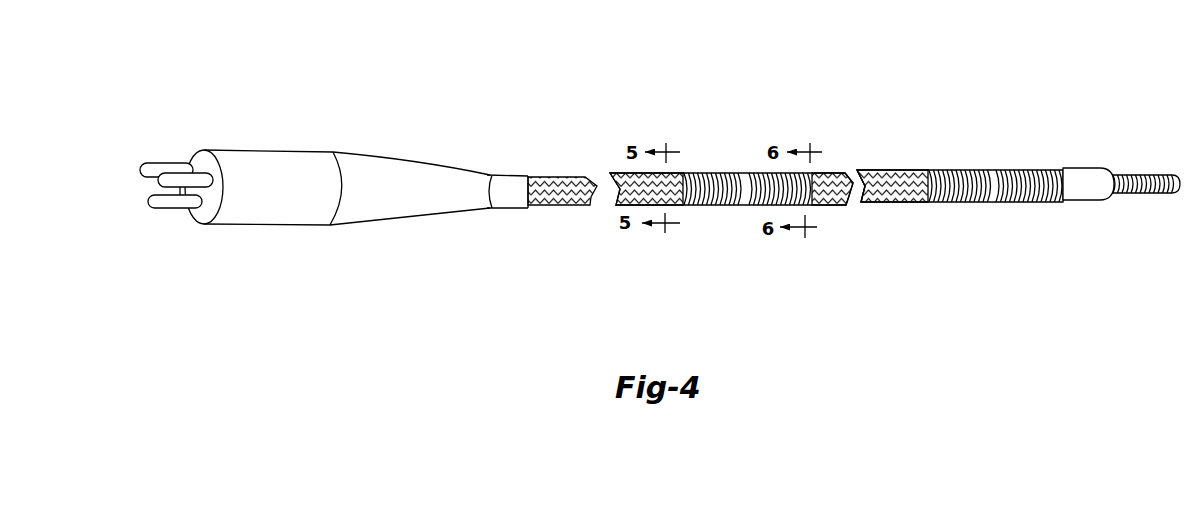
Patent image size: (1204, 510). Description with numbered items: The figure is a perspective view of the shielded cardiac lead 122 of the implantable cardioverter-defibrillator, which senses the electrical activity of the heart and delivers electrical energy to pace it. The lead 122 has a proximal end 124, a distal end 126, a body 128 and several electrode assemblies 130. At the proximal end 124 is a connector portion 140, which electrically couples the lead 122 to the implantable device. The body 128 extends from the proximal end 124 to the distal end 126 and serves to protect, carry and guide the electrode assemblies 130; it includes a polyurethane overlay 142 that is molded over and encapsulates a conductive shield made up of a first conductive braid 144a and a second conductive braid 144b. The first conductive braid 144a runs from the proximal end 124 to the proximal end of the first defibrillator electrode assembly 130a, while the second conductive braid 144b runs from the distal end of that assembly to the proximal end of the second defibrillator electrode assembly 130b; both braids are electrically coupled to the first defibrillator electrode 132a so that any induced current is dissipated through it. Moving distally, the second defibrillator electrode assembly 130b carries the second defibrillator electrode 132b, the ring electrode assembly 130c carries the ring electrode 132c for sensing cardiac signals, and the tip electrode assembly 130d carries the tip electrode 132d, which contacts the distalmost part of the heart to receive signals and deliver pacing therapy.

The ICD lead 122 is at (885, 45).
The proximal end 124 is at (315, 158).
The distal end 126 is at (1110, 105).
The body 128 is at (872, 168).
The electrode assembly 130 is at (768, 80).
The first defibrillator electrode assembly 130a is at (731, 181).
The second defibrillator electrode assembly 130b is at (940, 169).
The ring electrode assembly 130c is at (1063, 191).
The tip electrode assembly 130d is at (1158, 208).
The first defibrillator electrode 132a is at (713, 207).
The second defibrillator electrode 132b is at (973, 201).
The ring electrode 132c is at (1073, 197).
The tip electrode 132d is at (1178, 182).
The connector portion 140 is at (310, 215).
The overlay 142 is at (553, 177).
The first conductive braid 144a is at (573, 207).
The second conductive braid 144b is at (890, 203).